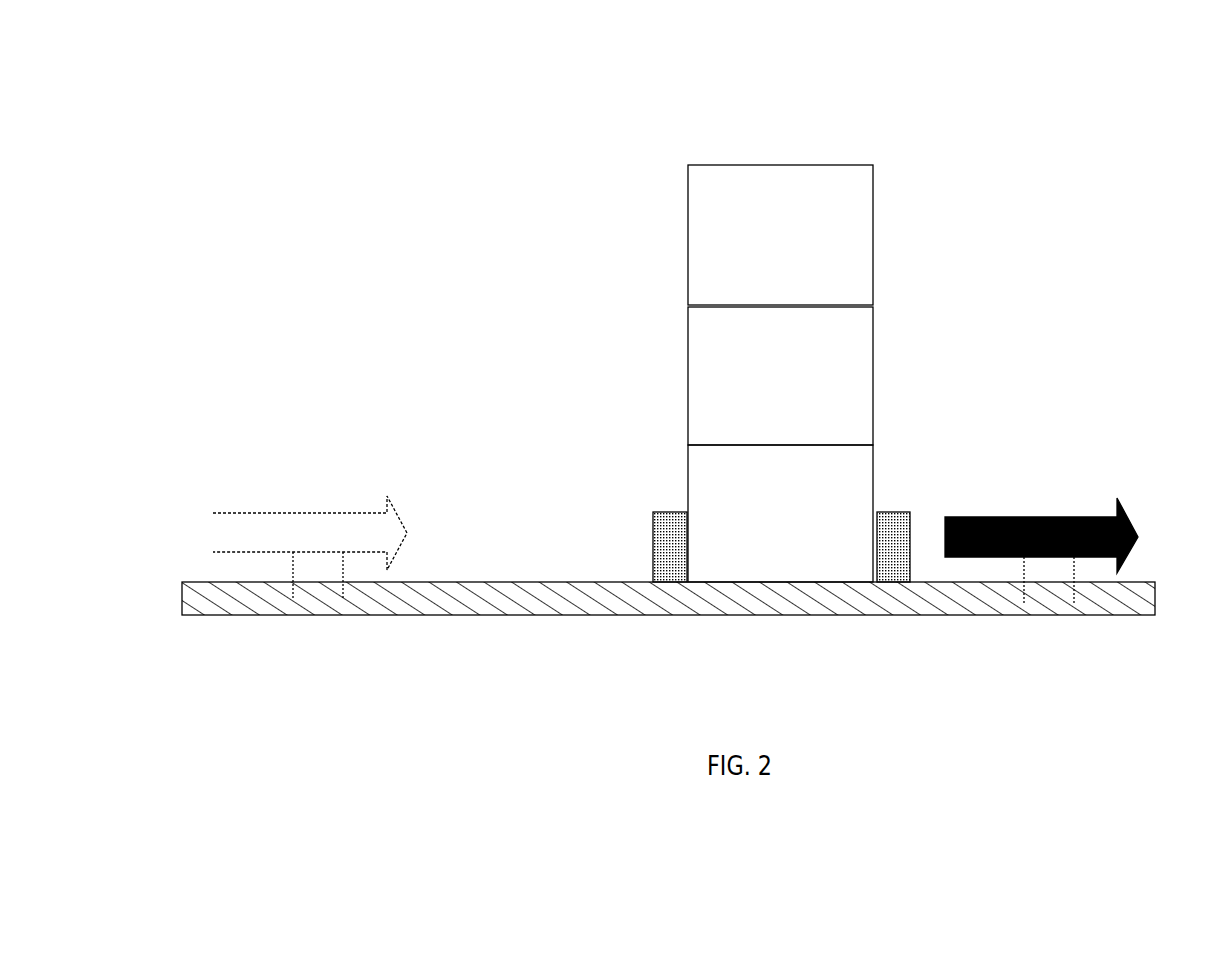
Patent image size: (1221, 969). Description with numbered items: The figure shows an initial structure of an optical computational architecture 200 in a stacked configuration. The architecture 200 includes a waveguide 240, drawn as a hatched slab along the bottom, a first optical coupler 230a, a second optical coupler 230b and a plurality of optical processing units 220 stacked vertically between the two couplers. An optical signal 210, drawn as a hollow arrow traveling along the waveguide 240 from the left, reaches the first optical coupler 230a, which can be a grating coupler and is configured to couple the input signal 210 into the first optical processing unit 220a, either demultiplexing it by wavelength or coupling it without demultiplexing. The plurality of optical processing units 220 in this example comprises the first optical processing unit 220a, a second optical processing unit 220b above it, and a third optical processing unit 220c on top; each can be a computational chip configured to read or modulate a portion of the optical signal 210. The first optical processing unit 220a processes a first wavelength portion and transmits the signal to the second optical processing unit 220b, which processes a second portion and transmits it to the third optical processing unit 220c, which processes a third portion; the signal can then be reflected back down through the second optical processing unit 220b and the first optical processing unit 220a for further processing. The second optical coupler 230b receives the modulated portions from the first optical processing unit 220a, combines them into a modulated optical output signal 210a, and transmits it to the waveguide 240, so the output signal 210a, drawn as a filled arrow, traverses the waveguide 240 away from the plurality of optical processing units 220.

The optical computational architecture 200 is at (455, 203).
The optical signal 210 is at (357, 485).
The modulated optical output signal 210a is at (1088, 490).
The plurality of optical processing units 220 is at (907, 142).
The first optical processing unit 220a is at (780, 513).
The second optical processing unit 220b is at (780, 376).
The third optical processing unit 220c is at (780, 235).
The first optical coupler 230a is at (642, 513).
The second optical coupler 230b is at (929, 511).
The waveguide 240 is at (511, 570).